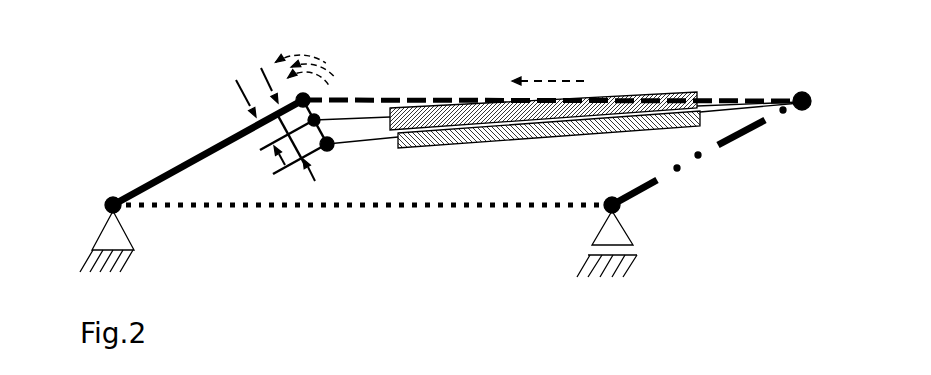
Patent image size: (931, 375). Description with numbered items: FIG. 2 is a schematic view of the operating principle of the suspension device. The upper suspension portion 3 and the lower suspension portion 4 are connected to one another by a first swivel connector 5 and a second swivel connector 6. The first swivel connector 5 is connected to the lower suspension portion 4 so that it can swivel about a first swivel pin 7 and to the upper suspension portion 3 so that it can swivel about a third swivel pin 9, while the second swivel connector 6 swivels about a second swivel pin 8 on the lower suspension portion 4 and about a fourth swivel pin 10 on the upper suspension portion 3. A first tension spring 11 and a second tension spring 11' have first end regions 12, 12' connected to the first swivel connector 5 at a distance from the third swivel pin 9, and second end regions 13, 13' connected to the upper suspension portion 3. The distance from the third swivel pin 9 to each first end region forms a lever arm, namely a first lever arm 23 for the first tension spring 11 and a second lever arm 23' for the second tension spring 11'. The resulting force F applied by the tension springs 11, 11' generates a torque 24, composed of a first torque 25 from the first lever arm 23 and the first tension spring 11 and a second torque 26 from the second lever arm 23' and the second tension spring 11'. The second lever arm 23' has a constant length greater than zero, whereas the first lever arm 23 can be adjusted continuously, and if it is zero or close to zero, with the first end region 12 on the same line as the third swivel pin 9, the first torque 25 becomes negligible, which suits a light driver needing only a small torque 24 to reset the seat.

The upper suspension portion 3 is at (414, 97).
The lower suspension portion 4 is at (440, 208).
The first swivel connector 5 is at (142, 188).
The second swivel connector 6 is at (732, 142).
The first swivel pin 7 is at (106, 203).
The second swivel pin 8 is at (621, 206).
The third swivel pin 9 is at (296, 96).
The fourth swivel pin 10 is at (805, 77).
The first tension spring 11 is at (553, 97).
The second tension spring 11' is at (552, 107).
The first end region of the first tension spring 12 is at (238, 89).
The first end region of the second tension spring 12' is at (318, 187).
The second end region of the first tension spring 13 is at (805, 77).
The second end region of the second tension spring 13' is at (805, 77).
The first lever arm 23 is at (265, 138).
The second lever arm 23' is at (287, 179).
The torque 24 is at (283, 56).
The first torque 25 is at (319, 62).
The second torque 26 is at (332, 84).
The resulting force F is at (559, 80).